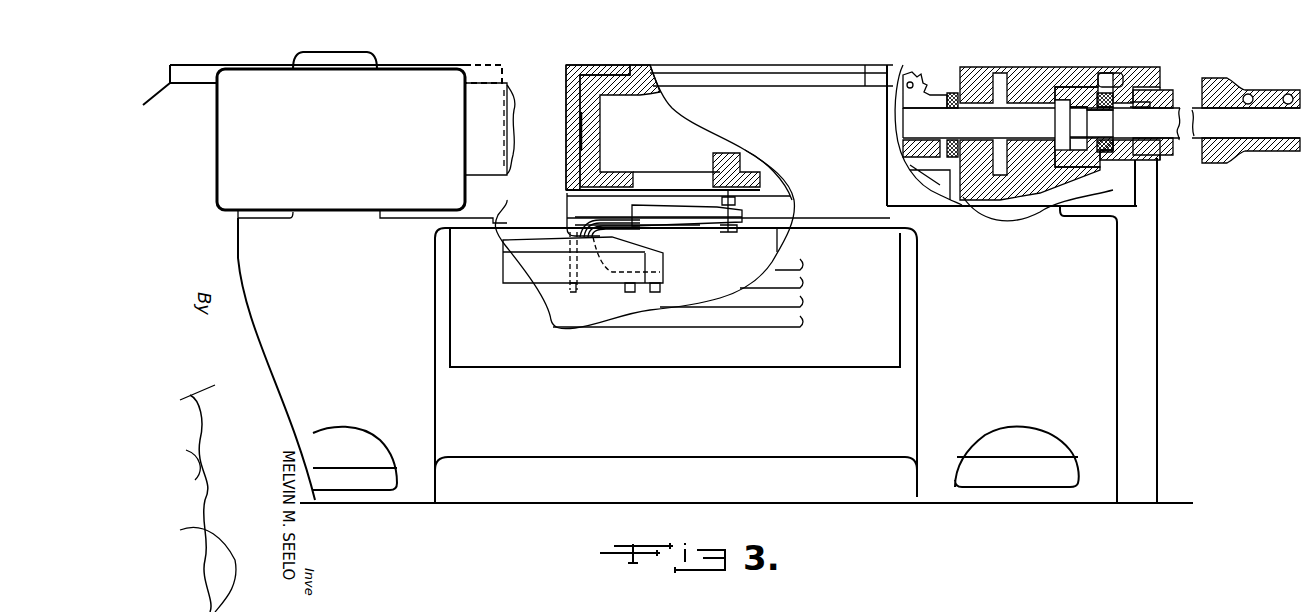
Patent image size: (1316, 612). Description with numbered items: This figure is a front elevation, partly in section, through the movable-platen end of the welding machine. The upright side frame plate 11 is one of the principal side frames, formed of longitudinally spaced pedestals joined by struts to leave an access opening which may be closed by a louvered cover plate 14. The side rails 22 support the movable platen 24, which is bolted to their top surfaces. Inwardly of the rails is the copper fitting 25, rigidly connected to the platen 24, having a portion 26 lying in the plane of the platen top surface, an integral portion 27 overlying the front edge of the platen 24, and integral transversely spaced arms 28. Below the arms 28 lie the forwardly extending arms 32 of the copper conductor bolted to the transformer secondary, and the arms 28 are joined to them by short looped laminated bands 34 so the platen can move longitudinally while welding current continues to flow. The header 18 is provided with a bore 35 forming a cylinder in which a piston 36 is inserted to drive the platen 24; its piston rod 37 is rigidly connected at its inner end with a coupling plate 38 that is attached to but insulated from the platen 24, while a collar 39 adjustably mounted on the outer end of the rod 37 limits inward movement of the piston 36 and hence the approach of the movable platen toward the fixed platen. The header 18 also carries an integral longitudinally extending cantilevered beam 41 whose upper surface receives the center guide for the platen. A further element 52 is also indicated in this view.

The side frame plate 11 is at (1097, 297).
The louvered cover plate 14 is at (800, 358).
The header 18 is at (985, 66).
The side rail 22 is at (505, 90).
The movable platen 24 is at (754, 61).
The copper fitting 25 is at (561, 109).
The portion of copper fitting 26 is at (612, 75).
The integral portion overlying front edge 27 is at (570, 118).
The arms of copper fitting 28 is at (657, 207).
The forwardly extending arm 32 is at (662, 272).
The looped laminated band 34 is at (630, 225).
The bore 35 is at (1047, 67).
The piston 36 is at (1082, 80).
The piston rod 37 is at (1173, 113).
The coupling plate 38 is at (925, 94).
The collar 39 is at (1242, 82).
The cantilevered beam 41 is at (785, 226).
The bolt 52 is at (726, 212).